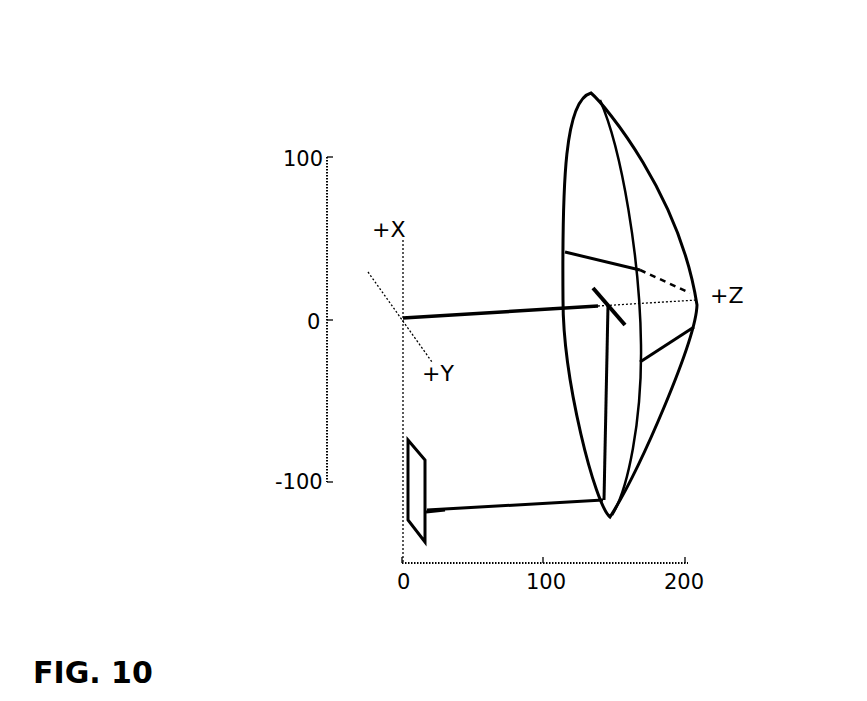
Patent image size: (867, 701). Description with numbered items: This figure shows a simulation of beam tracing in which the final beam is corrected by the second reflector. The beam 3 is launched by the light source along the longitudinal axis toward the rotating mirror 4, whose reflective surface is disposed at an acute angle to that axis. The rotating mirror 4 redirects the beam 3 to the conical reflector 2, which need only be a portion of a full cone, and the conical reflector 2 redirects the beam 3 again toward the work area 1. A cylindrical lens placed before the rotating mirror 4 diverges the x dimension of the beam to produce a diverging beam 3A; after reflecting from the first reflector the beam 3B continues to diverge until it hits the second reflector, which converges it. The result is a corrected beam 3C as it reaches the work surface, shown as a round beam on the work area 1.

The work area 1 is at (407, 508).
The conical reflector 2 is at (587, 163).
The beam 3 is at (477, 312).
The diverging beam 3A is at (598, 374).
The reflected diverging beam 3B is at (532, 505).
The beam at work surface 3C is at (420, 514).
The rotating mirror 4 is at (580, 306).